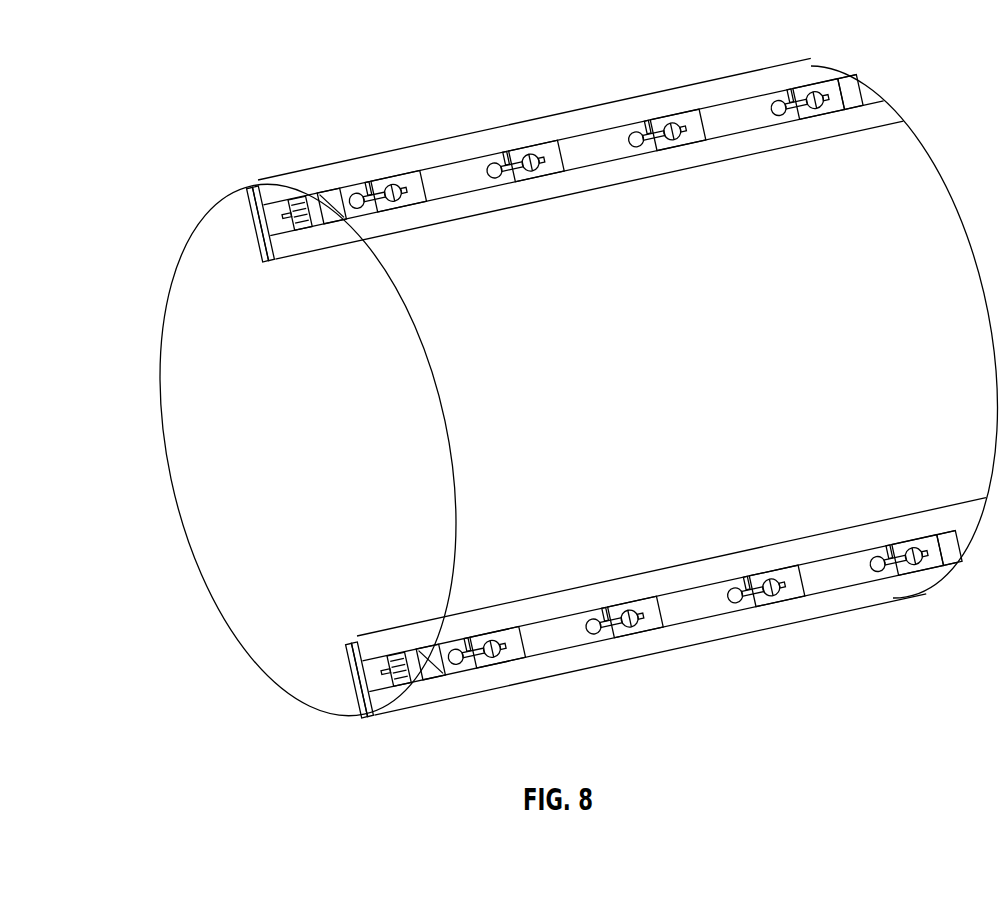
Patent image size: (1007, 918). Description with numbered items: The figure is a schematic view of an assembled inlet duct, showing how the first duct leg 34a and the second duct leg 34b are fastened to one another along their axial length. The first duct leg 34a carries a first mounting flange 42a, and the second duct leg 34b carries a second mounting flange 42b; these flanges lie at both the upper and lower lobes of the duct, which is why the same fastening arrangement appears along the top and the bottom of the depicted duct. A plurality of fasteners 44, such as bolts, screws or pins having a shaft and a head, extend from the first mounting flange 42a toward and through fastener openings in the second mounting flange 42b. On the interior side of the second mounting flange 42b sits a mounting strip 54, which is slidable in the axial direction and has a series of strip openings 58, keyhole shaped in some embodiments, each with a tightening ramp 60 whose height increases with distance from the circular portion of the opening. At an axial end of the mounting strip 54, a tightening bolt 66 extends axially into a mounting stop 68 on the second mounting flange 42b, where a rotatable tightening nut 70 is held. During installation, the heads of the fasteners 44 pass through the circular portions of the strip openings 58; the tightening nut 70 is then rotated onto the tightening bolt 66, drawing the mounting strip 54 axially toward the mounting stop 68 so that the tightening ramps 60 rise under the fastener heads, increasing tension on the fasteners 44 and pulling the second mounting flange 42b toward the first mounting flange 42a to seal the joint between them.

The first duct leg 34a is at (167, 302).
The second duct leg 34b is at (450, 452).
The first mounting flange 42a is at (254, 220).
The second mounting flange 42b is at (250, 188).
The fasteners 44 is at (391, 184).
The mounting strip 54 is at (620, 120).
The strip openings 58 is at (368, 187).
The tightening ramp 60 is at (413, 199).
The tightening bolt 66 is at (286, 215).
The mounting stop 68 is at (316, 230).
The tightening nut 70 is at (303, 229).